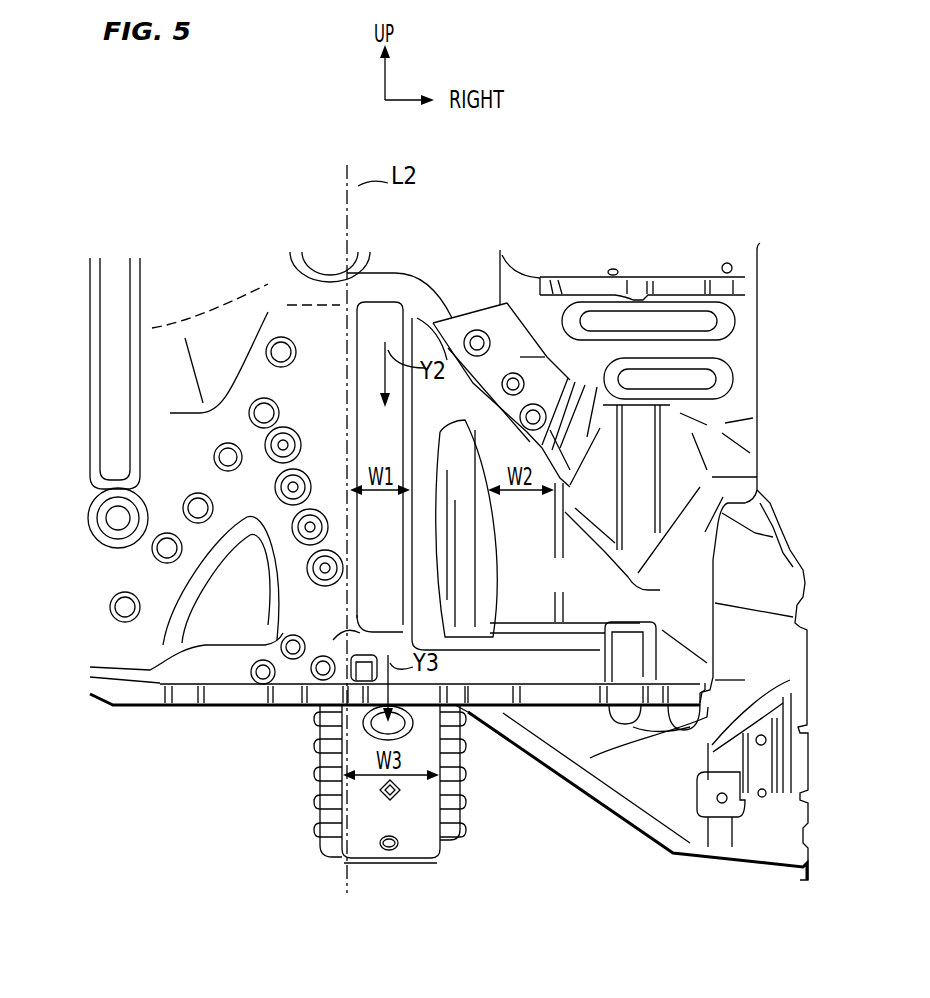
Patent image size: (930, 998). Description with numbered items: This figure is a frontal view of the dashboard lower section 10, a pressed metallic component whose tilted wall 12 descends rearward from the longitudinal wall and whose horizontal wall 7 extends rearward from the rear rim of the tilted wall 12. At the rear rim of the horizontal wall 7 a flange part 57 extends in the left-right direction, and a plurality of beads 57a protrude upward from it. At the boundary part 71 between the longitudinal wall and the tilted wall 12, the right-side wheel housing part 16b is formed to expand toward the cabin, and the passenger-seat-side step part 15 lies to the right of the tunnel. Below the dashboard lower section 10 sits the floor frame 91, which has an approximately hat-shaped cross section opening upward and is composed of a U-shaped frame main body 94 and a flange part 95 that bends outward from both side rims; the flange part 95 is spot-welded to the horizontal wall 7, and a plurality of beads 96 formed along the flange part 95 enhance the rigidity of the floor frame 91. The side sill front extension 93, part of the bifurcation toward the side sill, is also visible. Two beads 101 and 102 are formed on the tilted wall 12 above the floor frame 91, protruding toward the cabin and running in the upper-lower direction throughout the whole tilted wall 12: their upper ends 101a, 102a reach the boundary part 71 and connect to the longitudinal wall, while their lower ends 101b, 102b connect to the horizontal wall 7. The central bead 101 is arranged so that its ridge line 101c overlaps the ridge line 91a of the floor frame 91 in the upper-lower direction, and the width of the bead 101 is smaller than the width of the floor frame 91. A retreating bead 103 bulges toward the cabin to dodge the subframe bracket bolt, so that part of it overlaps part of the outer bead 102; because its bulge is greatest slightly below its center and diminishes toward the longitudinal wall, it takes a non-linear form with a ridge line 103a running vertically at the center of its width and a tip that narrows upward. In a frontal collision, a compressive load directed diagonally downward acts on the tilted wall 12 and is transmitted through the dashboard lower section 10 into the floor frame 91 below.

The horizontal wall 7 is at (203, 670).
The dashboard lower section 10 is at (769, 358).
The tilted wall 12 is at (170, 447).
The passenger-seat-side step part 15 is at (643, 612).
The wheel housing part 16b is at (678, 307).
The flange part 57 is at (122, 700).
The beads 57a is at (490, 695).
The boundary part 71 is at (327, 285).
The floor frame 91 is at (380, 837).
The ridge line 91a is at (345, 860).
The side sill front extension 93 is at (673, 813).
The frame main body 94 is at (395, 864).
The flange part 95 is at (320, 845).
The beads 96 is at (316, 812).
The bead 101 is at (348, 405).
The upper end 101a is at (378, 303).
The lower end 101b is at (345, 630).
The ridge line 101c is at (343, 430).
The bead 102 is at (530, 532).
The upper end 102a is at (545, 460).
The lower end 102b is at (523, 635).
The retreating bead 103 is at (432, 452).
The ridge line 103a is at (462, 570).